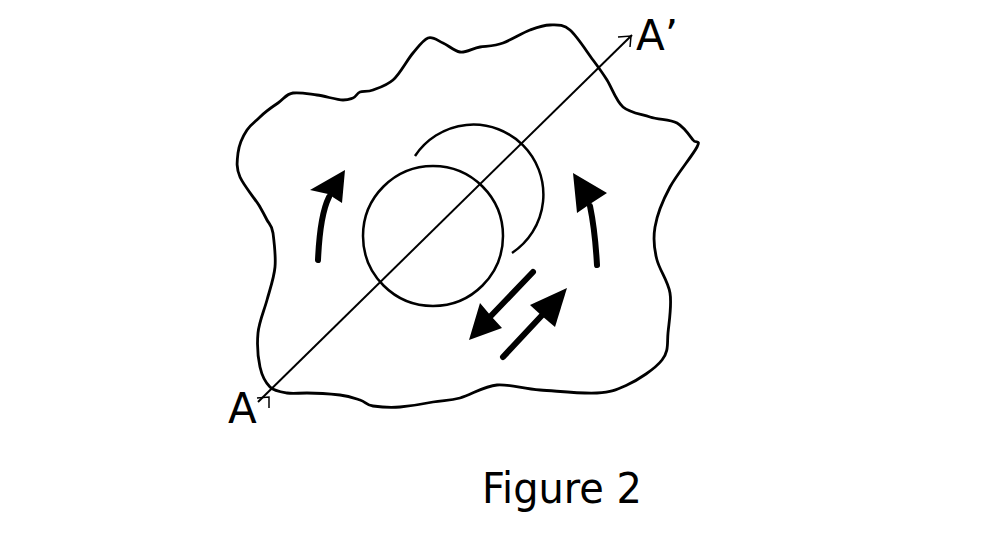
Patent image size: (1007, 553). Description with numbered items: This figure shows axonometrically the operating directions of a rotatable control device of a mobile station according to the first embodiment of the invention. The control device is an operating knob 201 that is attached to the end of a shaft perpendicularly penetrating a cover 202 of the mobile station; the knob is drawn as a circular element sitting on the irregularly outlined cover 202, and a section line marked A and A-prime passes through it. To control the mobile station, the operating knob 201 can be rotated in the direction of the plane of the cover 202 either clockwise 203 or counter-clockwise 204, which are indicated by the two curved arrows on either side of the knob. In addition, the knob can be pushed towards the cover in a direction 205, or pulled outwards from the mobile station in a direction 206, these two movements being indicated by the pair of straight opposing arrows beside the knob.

The operating knob 201 is at (398, 255).
The cover 202 is at (303, 118).
The clockwise direction 203 is at (315, 230).
The counter-clockwise direction 204 is at (600, 217).
The pushing direction 205 is at (556, 316).
The pulling direction 206 is at (497, 298).